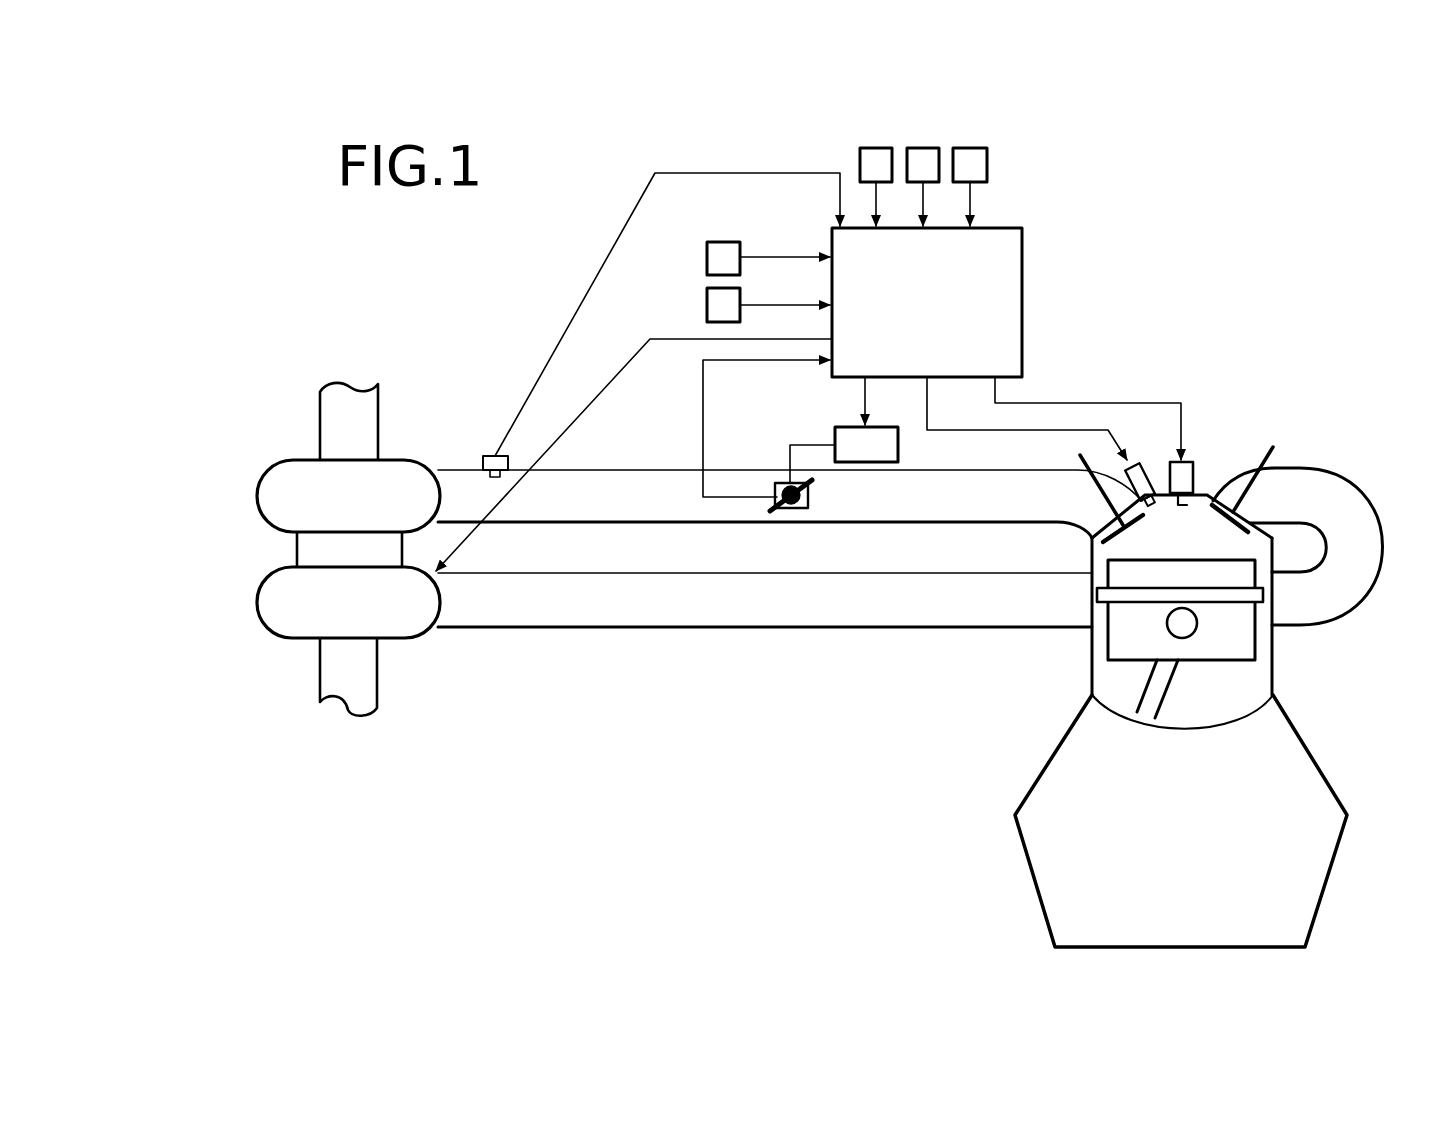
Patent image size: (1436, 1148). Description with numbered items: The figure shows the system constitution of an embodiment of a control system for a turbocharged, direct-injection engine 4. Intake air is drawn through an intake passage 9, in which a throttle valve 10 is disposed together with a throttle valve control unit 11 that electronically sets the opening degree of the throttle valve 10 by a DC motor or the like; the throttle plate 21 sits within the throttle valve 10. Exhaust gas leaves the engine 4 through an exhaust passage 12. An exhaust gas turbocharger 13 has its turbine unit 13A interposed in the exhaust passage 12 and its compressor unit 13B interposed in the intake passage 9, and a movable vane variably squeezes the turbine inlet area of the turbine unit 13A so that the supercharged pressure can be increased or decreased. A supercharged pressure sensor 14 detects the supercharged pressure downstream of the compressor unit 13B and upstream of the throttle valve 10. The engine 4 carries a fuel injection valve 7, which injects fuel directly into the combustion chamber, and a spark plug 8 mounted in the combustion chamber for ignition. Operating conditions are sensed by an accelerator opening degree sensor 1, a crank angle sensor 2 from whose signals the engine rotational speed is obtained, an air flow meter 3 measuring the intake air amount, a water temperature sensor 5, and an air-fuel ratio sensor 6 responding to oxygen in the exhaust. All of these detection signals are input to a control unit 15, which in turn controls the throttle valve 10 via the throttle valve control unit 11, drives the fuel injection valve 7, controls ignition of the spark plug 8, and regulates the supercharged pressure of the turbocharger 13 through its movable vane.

The accelerator opening degree sensor 1 is at (707, 257).
The crank angle sensor 2 is at (707, 305).
The air flow meter 3 is at (876, 148).
The engine 4 is at (1310, 737).
The water temperature sensor 5 is at (924, 148).
The air-fuel ratio sensor 6 is at (971, 148).
The fuel injection valve 7 is at (1142, 470).
The spark plug 8 is at (1188, 478).
The intake passage 9 is at (658, 470).
The throttle valve 10 is at (782, 511).
The throttle valve control unit 11 is at (835, 432).
The exhaust passage 12 is at (680, 628).
The exhaust gas turbocharger 13 is at (288, 654).
The turbine unit 13A is at (410, 615).
The compressor unit 13B is at (400, 478).
The supercharged pressure sensor 14 is at (490, 456).
The control unit 15 is at (1022, 302).
The throttle plate 21 is at (808, 511).